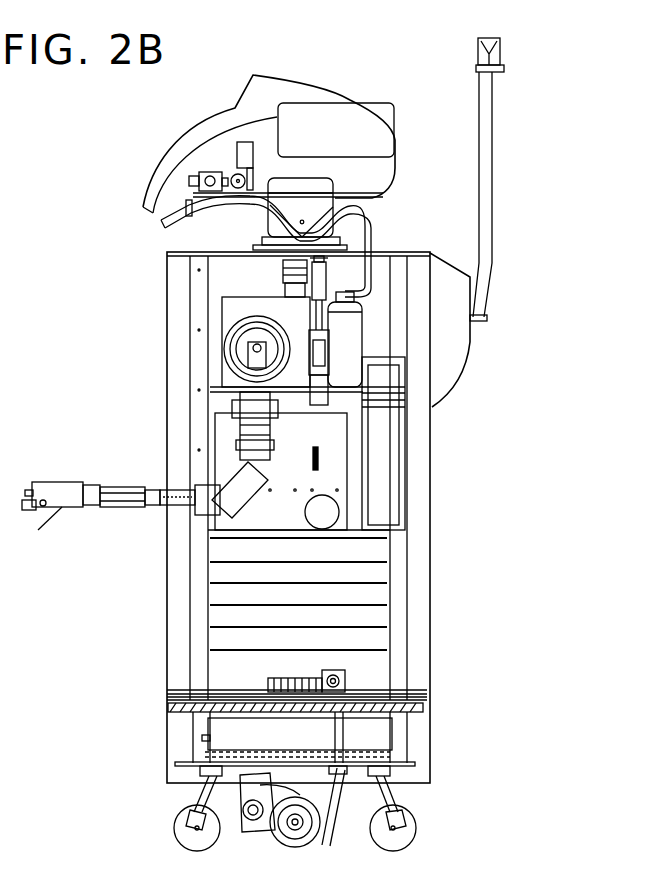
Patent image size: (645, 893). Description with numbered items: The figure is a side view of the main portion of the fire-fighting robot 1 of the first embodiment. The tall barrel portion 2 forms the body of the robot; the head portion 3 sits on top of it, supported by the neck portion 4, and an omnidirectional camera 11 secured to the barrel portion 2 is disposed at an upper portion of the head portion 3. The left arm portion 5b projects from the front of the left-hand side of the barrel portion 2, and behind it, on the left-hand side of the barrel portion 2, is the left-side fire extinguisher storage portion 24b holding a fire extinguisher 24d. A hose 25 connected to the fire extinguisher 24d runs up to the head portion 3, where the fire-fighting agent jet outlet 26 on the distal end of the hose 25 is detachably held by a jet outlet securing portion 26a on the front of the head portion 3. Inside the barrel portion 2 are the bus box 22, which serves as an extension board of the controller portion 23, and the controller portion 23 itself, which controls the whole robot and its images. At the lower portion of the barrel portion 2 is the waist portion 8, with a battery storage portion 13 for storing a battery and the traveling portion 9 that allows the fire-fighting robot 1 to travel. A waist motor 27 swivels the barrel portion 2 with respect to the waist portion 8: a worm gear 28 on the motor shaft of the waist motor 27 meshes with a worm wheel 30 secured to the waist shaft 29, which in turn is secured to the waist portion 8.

The fire-fighting robot 1 is at (147, 131).
The barrel portion 2 is at (453, 231).
The head portion 3 is at (413, 154).
The neck portion 4 is at (258, 227).
The left arm portion 5b is at (103, 460).
The waist portion 8 is at (150, 733).
The traveling portion 9 is at (158, 825).
The omnidirectional camera 11 is at (488, 47).
The battery storage portion 13 is at (380, 725).
The bus box 22 is at (333, 465).
The controller portion 23 is at (368, 593).
The left-side fire extinguisher storage portion 24b is at (373, 320).
The fire extinguisher 24d is at (333, 373).
The hose 25 is at (368, 234).
The fire-fighting agent jet outlet 26 is at (160, 219).
The jet outlet securing portion 26a is at (187, 207).
The waist motor 27 is at (347, 672).
The worm gear 28 is at (347, 690).
The waist shaft 29 is at (267, 686).
The worm wheel 30 is at (287, 678).